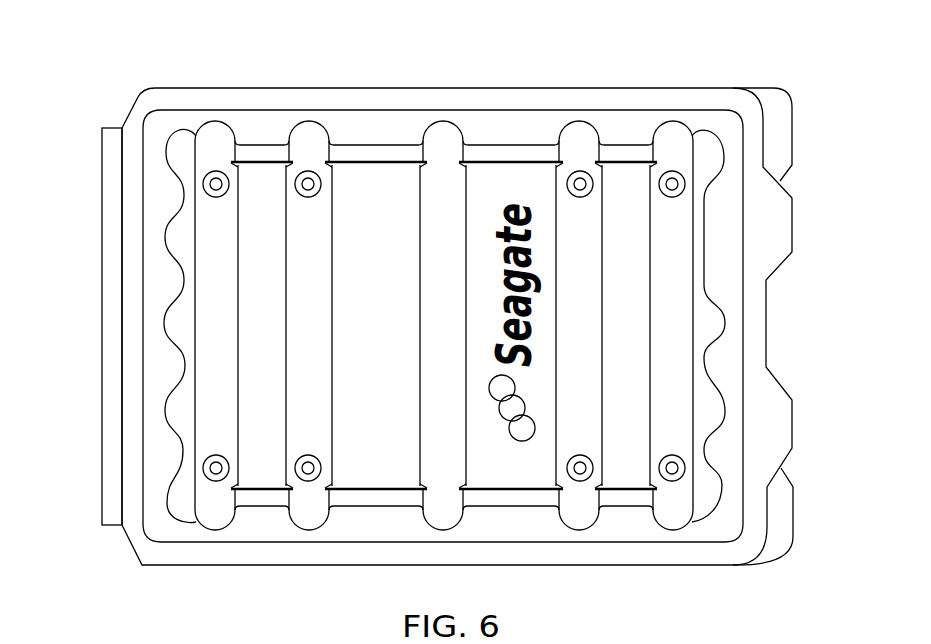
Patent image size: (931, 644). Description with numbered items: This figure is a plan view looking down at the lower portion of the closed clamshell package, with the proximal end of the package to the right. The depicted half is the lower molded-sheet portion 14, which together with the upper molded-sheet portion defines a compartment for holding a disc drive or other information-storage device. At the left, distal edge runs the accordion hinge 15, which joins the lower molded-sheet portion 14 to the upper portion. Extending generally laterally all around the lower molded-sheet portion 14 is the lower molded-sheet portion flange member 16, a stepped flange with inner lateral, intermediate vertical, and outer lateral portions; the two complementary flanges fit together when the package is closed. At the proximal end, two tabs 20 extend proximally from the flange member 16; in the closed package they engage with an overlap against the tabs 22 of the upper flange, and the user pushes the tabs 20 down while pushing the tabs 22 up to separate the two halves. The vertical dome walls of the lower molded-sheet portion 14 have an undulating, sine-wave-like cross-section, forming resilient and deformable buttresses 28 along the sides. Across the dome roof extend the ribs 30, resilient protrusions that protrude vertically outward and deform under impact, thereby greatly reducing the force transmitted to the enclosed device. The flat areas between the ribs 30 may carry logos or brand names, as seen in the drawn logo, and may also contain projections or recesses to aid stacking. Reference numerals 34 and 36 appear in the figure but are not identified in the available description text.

The lower molded-sheet portion 14 is at (168, 60).
The accordion hinge 15 is at (110, 140).
The lower molded-sheet portion flange member 16 is at (632, 87).
The tabs 20 is at (749, 237).
The tabs 22 is at (793, 113).
The buttresses 28 is at (147, 293).
The ribs 30 is at (198, 338).
The screw bosses 34 is at (216, 171).
The recessed channels between ribs 36 is at (476, 198).